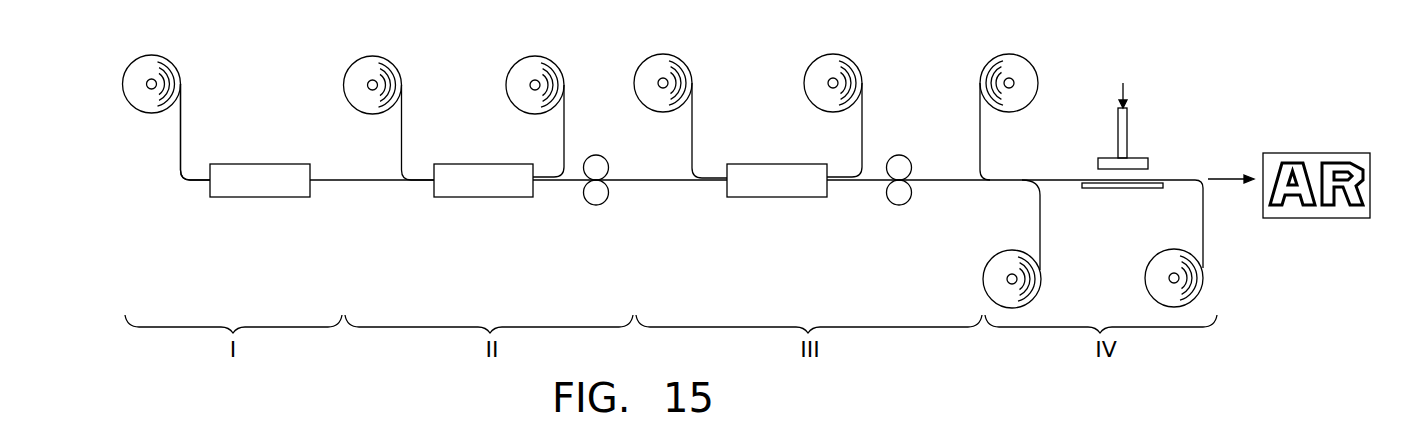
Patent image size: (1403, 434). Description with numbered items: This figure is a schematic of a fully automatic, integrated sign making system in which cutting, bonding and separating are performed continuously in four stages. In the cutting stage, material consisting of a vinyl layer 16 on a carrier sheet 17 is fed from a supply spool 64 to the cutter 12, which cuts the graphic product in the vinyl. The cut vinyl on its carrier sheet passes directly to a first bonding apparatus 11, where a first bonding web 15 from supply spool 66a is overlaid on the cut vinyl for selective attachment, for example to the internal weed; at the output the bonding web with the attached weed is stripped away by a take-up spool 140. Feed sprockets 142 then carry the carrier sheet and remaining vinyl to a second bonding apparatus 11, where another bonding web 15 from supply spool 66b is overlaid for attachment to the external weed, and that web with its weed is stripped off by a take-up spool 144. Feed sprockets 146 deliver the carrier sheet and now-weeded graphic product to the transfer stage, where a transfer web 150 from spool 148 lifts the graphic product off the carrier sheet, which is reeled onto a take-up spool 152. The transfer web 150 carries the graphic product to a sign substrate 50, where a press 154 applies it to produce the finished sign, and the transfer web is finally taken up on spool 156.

The bonding apparatus 11 is at (525, 197).
The cutter 12 is at (300, 197).
The bonding web 15 is at (402, 128).
The vinyl layer 16 is at (180, 128).
The carrier sheet 17 is at (196, 132).
The sign substrate 50 is at (1125, 189).
The supply spool 64 is at (173, 58).
The supply spool 66a is at (394, 58).
The supply spool 66b is at (679, 58).
The take-up spool 140 is at (556, 58).
The feed sprockets 142 is at (603, 157).
The take-up spool 144 is at (850, 58).
The feed sprockets 146 is at (905, 157).
The spool 148 is at (1028, 58).
The transfer web 150 is at (1069, 178).
The take-up spool 152 is at (1030, 297).
The press 154 is at (1148, 160).
The spool 156 is at (1193, 300).